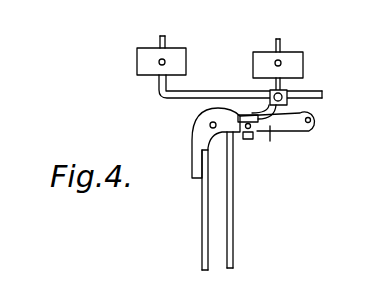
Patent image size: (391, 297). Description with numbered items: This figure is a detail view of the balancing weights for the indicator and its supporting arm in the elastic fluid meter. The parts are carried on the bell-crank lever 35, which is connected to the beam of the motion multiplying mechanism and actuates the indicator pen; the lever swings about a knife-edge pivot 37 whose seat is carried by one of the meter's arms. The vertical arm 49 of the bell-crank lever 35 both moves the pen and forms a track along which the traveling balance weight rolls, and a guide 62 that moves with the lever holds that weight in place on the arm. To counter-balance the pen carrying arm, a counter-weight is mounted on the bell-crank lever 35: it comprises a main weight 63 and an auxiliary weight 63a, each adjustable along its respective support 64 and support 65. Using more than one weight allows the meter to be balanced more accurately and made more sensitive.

The bell-crank lever 35 is at (273, 145).
The knife-edge pivot 37 is at (209, 122).
The arm of the bell-crank lever 49 is at (201, 218).
The guide 62 is at (233, 197).
The main weight 63 is at (137, 59).
The auxiliary weight 63a is at (303, 63).
The support 64 is at (159, 85).
The support 65 is at (300, 112).